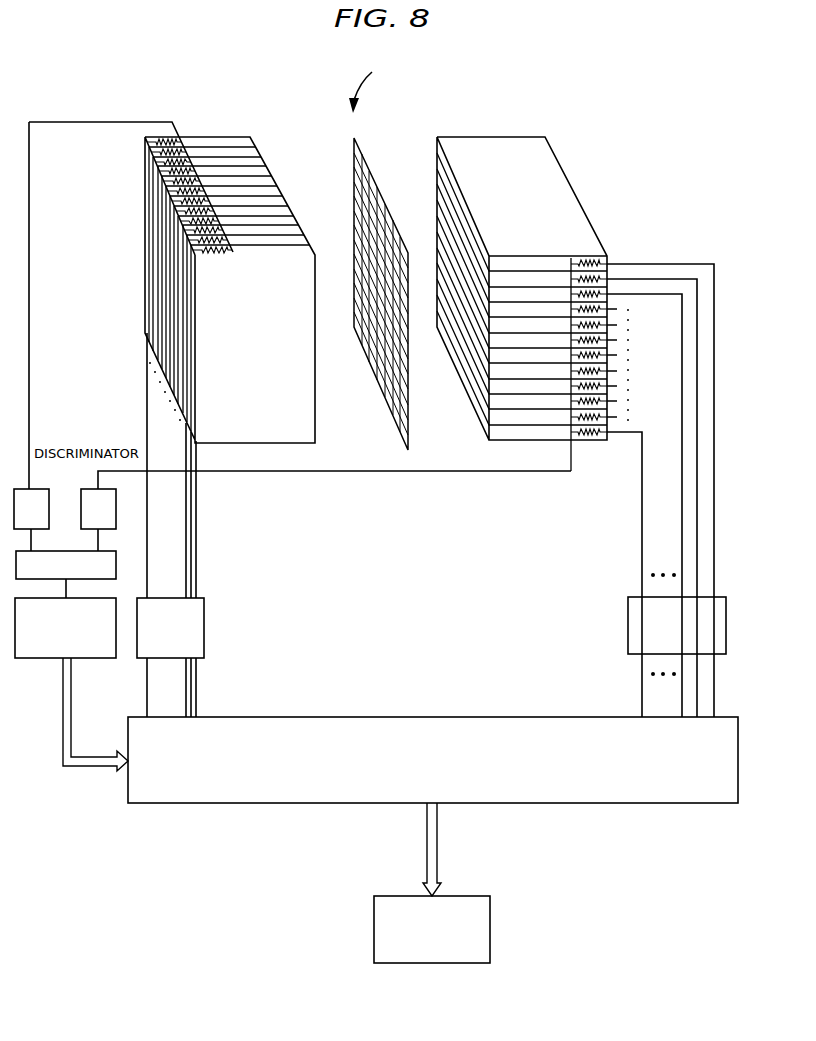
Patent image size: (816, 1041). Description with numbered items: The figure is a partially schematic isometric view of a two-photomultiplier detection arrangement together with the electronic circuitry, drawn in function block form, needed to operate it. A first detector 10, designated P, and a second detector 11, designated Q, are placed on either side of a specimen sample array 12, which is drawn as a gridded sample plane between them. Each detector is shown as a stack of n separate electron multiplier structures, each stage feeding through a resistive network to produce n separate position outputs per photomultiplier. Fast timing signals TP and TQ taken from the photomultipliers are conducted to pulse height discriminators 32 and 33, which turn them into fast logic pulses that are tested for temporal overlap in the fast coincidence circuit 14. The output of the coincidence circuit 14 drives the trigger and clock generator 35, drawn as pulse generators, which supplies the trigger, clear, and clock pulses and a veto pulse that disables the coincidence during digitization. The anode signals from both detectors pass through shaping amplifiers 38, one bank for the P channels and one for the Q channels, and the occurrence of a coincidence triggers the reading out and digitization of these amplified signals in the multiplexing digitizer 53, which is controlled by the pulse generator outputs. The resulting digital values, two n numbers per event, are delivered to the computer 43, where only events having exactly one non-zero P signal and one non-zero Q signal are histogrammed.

The first detector 10 is at (213, 106).
The second detector 11 is at (523, 108).
The specimen sample array 12 is at (389, 162).
The coincidence circuit 14 is at (104, 551).
The discriminator 32 is at (49, 509).
The discriminator 33 is at (116, 509).
The trigger and clock generator 35 is at (48, 658).
The amplifiers 38 is at (204, 598).
The computer memory 43 is at (490, 913).
The multiplexing digitizer 53 is at (285, 717).